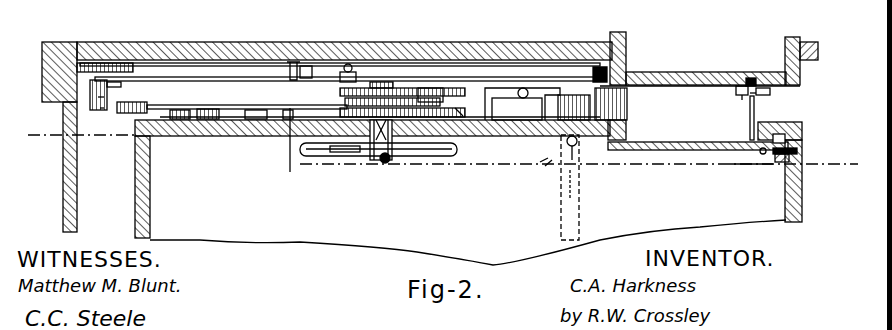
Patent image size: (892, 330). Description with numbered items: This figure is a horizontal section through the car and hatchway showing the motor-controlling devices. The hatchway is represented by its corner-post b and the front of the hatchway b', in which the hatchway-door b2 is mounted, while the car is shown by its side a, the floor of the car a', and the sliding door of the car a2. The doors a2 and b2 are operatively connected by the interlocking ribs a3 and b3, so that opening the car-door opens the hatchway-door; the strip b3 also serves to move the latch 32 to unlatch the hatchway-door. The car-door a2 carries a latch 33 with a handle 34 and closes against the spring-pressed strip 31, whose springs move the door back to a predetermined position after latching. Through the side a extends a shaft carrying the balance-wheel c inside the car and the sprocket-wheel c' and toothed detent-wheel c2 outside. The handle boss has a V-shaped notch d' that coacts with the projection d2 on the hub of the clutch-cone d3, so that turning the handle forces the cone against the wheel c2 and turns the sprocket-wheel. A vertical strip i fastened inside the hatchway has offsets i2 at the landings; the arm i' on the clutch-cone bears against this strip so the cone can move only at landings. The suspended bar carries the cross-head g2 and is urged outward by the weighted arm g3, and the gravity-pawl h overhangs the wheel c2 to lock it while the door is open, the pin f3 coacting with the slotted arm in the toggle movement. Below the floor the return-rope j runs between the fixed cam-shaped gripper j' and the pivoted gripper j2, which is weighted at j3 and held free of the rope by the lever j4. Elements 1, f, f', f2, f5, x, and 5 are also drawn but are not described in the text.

The corner-post of the hatchway b is at (59, 122).
The front of the hatchway b' is at (344, 31).
The hatchway-door b2 is at (709, 59).
The interlocking rib / strip b3 is at (737, 91).
The side of the car a is at (380, 177).
The floor of the car a' is at (241, 187).
The sliding door of the car a2 is at (750, 108).
The interlocking rib / stationary strip a3 is at (765, 94).
The center line 1 is at (437, 161).
The slide rail f' is at (340, 43).
The slide plate f is at (516, 66).
The slide head f2 is at (90, 83).
The pin f3 is at (98, 97).
The slide lug f5 is at (101, 109).
The cross-head g2 is at (124, 110).
The weighted arm g3 is at (205, 121).
The gravity-pawl h is at (205, 99).
The vertical strip i is at (279, 82).
The offsets i2 is at (308, 64).
The arm i' is at (281, 138).
The shaft x is at (285, 152).
The sprocket-wheel c' is at (402, 63).
The balance-wheel c is at (405, 168).
The toothed detent-wheel c2 is at (455, 112).
The V-shaped notch d' is at (378, 180).
The projection d2 is at (386, 160).
The clutch-cone d3 is at (443, 160).
The return-rope j is at (543, 168).
The cam-shaped gripper j' is at (524, 52).
The pivoted gripper j2 is at (583, 93).
The weight j3 is at (548, 90).
The lever j4 is at (575, 178).
The latch 32 is at (751, 82).
The pin 5 is at (747, 165).
The spring-pressed strip 31 is at (768, 152).
The latch 33 is at (780, 156).
The handle 34 is at (732, 174).